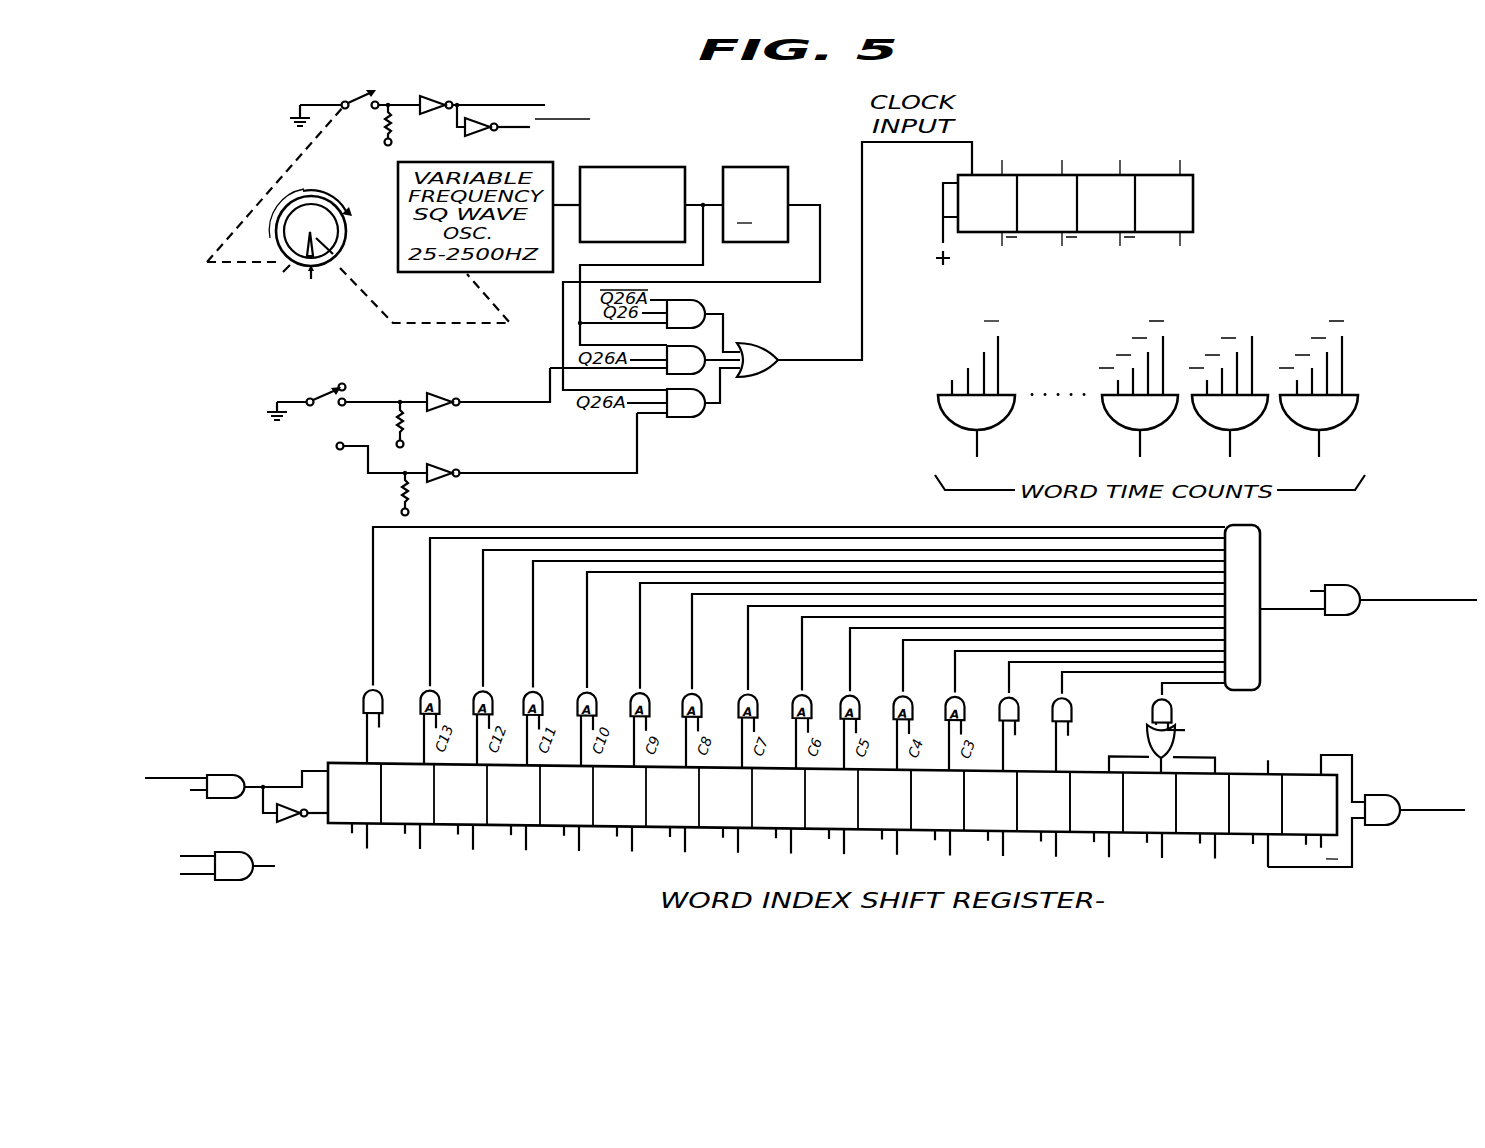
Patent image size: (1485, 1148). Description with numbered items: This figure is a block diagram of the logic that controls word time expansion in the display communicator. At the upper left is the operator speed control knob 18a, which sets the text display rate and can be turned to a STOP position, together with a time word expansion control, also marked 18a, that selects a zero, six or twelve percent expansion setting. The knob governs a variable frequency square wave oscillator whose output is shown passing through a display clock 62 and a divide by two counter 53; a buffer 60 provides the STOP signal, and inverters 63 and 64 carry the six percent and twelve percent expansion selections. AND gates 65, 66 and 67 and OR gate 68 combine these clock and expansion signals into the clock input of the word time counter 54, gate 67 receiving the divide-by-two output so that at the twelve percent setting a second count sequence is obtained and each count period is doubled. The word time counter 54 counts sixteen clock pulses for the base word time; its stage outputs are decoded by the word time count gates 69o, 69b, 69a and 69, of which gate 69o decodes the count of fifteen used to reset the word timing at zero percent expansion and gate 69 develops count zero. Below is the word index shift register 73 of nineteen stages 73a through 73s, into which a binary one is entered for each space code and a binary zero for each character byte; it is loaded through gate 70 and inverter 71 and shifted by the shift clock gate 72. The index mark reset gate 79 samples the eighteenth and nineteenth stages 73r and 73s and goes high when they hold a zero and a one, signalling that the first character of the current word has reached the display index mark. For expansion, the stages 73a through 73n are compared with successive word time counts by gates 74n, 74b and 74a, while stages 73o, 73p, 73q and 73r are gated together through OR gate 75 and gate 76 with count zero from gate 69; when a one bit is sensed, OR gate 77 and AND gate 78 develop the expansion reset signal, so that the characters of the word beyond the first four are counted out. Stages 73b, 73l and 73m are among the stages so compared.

The speed control knob 18a is at (372, 181).
The divide by 2 counter 53 is at (773, 167).
The word time counter 54 is at (1195, 208).
The stop buffer / inverter 60 is at (432, 95).
The display clock 62 is at (660, 167).
The 6% expansion inverter 63 is at (449, 378).
The 12% expansion inverter 64 is at (446, 463).
The AND gate 65 is at (710, 300).
The AND gate 66 is at (716, 340).
The gate 67 is at (690, 417).
The OR gate 68 is at (760, 378).
The gate 69 is at (1338, 428).
The word time count AND gate C1 69a is at (1238, 432).
The word time count AND gate C2 69b is at (1148, 430).
The gate 69o is at (1005, 423).
The space code AND gate 70 is at (243, 778).
The inverter 71 is at (283, 828).
The shift clock AND gate 72 is at (240, 880).
The word index shift register 73 is at (833, 808).
The stage of word index shift register 73a is at (368, 800).
The stage of word index shift register 73b is at (421, 800).
The stage of word index shift register 73l is at (946, 800).
The stage of word index shift register 73m is at (1006, 800).
The stage of word index shift register 73n is at (1055, 800).
The stage of word index shift register 73o is at (1108, 800).
The stage of word index shift register 73p is at (1161, 800).
The stage of word index shift register 73q is at (1214, 800).
The stage of word index shift register 73r is at (1265, 800).
The stage of word index shift register 73s is at (1318, 800).
The gate 74a is at (1072, 698).
The gate 74b is at (1018, 693).
The gate 74n is at (364, 693).
The OR gate 75 is at (1147, 731).
The AND gate 76 is at (1172, 699).
The OR gate 77 is at (1262, 684).
The AND gate 78 is at (1340, 618).
The index mark reset gate 79 is at (1386, 792).